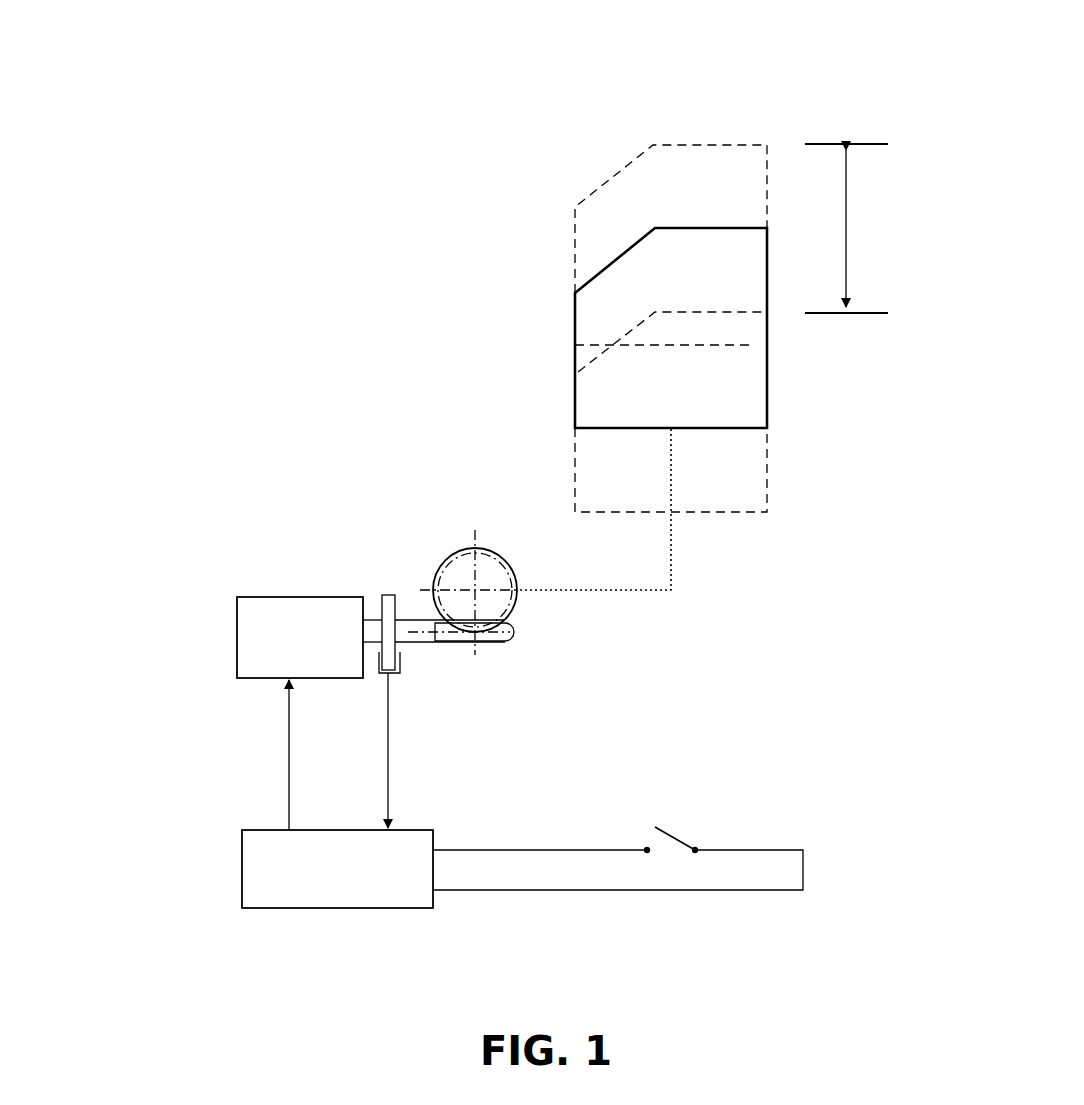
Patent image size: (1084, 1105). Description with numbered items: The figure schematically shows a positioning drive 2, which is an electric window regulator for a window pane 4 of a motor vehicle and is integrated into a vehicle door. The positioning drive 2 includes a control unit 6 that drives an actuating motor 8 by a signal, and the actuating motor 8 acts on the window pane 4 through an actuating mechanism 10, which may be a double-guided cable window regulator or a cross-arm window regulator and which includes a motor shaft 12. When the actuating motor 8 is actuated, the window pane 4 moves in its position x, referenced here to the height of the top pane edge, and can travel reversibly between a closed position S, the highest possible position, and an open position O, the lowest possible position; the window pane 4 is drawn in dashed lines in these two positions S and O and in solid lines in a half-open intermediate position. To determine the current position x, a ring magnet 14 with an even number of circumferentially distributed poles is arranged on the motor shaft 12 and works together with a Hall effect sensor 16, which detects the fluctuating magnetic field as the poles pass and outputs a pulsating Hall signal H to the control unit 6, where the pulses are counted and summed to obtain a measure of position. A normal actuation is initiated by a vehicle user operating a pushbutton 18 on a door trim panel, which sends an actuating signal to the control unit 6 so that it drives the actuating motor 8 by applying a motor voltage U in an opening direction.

The positioning drive 2 is at (175, 697).
The window pane 4 is at (575, 243).
The control unit 6 is at (326, 878).
The actuating motor 8 is at (291, 651).
The actuating mechanism 10 is at (677, 620).
The motor shaft 12 is at (513, 632).
The ring magnet 14 is at (388, 595).
The Hall effect sensor 16 is at (400, 668).
The pushbutton 18 is at (672, 838).
The closed position S is at (862, 144).
The open position O is at (875, 315).
The position X is at (846, 222).
The motor voltage U is at (289, 733).
The Hall signal H is at (388, 727).